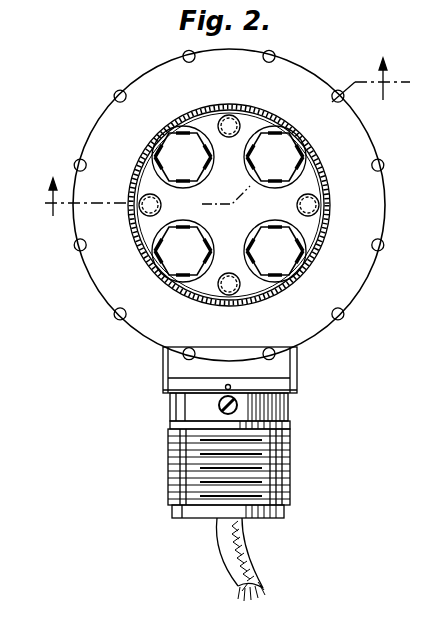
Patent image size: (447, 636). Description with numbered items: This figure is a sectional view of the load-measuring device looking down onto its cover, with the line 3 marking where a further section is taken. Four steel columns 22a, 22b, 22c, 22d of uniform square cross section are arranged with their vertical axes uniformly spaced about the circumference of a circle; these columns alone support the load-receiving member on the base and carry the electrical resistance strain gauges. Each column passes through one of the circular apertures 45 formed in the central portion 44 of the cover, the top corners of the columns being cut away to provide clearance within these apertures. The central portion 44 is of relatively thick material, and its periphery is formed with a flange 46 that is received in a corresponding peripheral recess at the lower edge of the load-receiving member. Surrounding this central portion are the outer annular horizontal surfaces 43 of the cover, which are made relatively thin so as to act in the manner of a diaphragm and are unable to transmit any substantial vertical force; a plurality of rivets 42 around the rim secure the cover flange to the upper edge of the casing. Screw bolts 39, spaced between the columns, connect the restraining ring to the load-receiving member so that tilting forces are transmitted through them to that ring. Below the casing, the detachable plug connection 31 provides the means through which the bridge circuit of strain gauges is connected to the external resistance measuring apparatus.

The section line 3- 3 is at (226, 127).
The column 22a is at (285, 155).
The column 22b is at (265, 245).
The column 22c is at (182, 256).
The column 22d is at (172, 152).
The detachable plug connection 31 is at (290, 405).
The screw bolts 39 is at (231, 114).
The rivets 42 is at (385, 164).
The outer annular horizontal surfaces of the cover 43 is at (375, 262).
The central portion of the cover 44 is at (270, 295).
The circular apertures 45 is at (210, 200).
The flange 46 is at (320, 254).